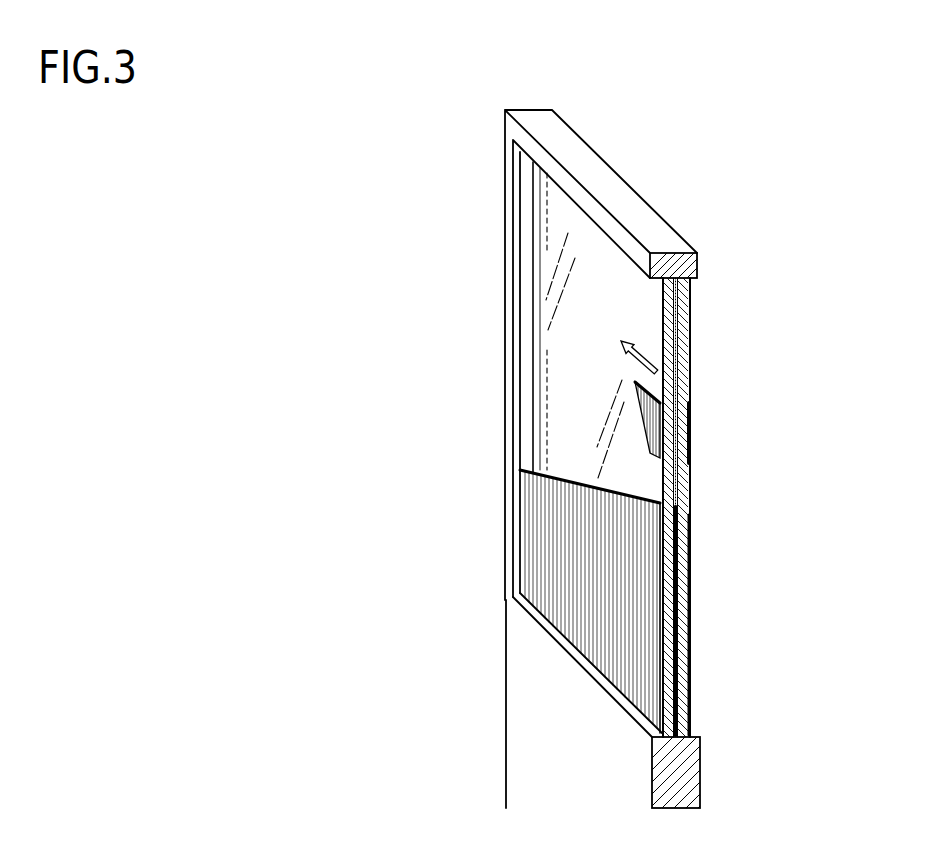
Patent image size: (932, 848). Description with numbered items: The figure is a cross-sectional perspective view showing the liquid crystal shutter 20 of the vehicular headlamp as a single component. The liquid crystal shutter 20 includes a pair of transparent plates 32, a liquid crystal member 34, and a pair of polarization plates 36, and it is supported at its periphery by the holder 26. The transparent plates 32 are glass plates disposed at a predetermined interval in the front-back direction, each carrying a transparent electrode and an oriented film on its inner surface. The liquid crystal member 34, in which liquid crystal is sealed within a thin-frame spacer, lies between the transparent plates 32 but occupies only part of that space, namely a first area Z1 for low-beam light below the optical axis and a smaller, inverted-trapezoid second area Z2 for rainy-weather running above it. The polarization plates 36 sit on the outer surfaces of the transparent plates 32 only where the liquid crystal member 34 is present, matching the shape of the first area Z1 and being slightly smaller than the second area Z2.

The liquid crystal shutter 20 is at (745, 298).
The holder 26 is at (535, 738).
The transparent plates 32 is at (568, 395).
The liquid crystal member 34 is at (632, 368).
The polarization plates 36 is at (580, 598).
The first area Z1 is at (703, 576).
The second area Z2 is at (700, 420).